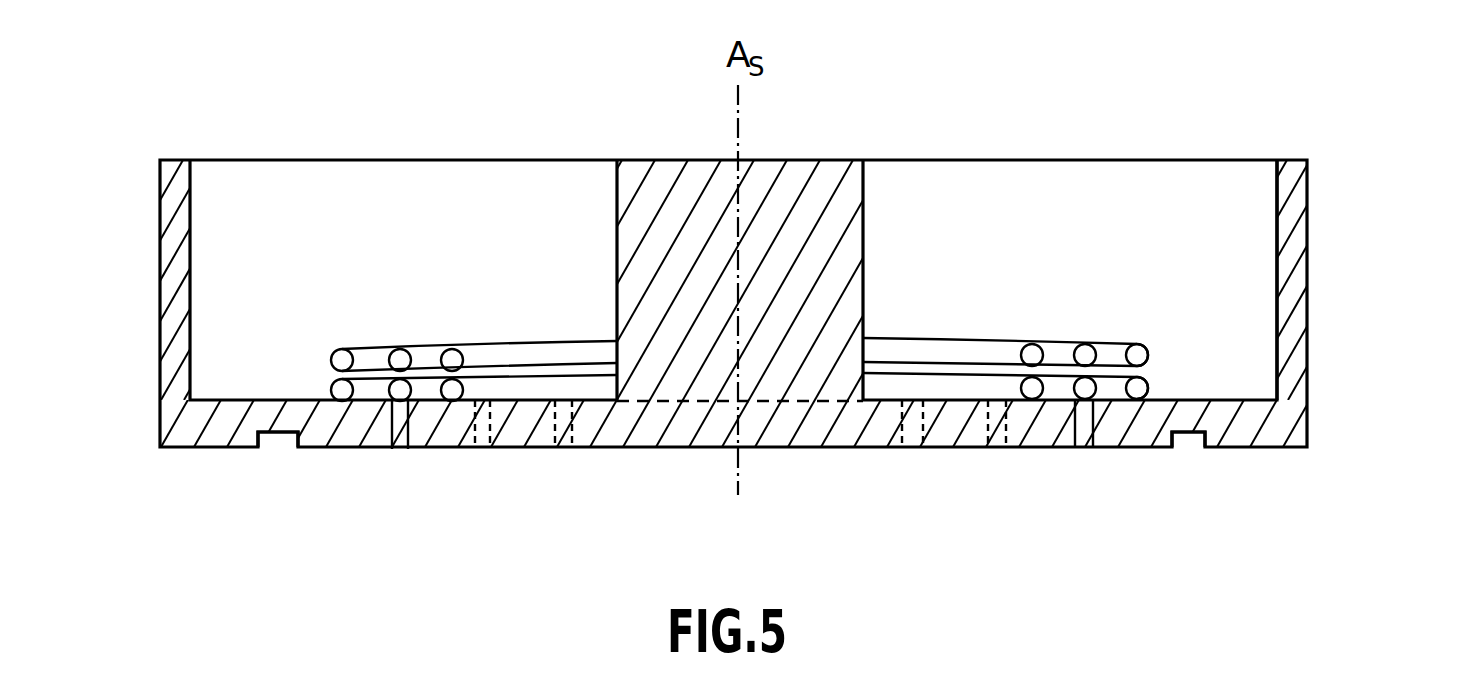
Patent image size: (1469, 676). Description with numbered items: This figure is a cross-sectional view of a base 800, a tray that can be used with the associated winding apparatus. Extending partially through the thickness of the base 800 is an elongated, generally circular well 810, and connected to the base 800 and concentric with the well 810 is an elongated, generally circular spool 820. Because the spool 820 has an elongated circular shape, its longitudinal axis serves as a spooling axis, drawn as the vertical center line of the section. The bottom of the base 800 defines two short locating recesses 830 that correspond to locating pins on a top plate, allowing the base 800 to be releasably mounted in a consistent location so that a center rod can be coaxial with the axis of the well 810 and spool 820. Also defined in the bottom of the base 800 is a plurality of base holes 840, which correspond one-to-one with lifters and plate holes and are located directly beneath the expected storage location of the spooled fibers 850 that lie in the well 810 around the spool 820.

The base 800 is at (1297, 323).
The well 810 is at (1253, 258).
The spool 820 is at (840, 262).
The locating recesses 830 is at (275, 441).
The base holes 840 is at (560, 447).
The spooled fibers 850 is at (1137, 396).